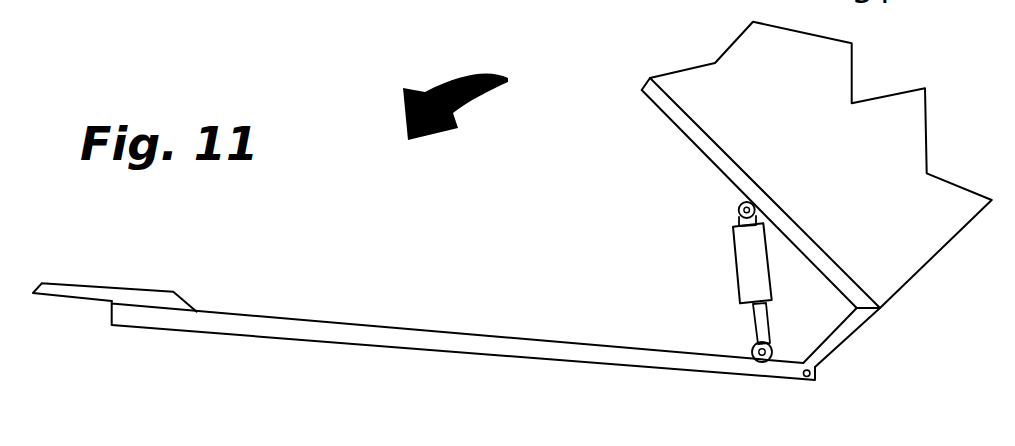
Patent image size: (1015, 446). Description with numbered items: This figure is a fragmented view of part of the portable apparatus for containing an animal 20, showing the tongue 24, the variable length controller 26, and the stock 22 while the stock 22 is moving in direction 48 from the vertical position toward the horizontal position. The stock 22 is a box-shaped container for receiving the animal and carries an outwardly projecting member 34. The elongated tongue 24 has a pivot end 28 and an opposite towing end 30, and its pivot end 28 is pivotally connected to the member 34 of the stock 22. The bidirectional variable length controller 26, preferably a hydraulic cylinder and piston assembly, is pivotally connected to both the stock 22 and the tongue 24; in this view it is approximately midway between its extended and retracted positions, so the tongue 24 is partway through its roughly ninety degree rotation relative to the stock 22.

The portable apparatus for containing an animal 20 is at (553, 192).
The stock 22 is at (927, 157).
The tongue 24 is at (392, 335).
The variable length controller 26 is at (672, 250).
The pivot end 28 is at (793, 387).
The towing end 30 is at (45, 282).
The outwardly projecting member 34 is at (837, 360).
The direction 48 is at (442, 77).